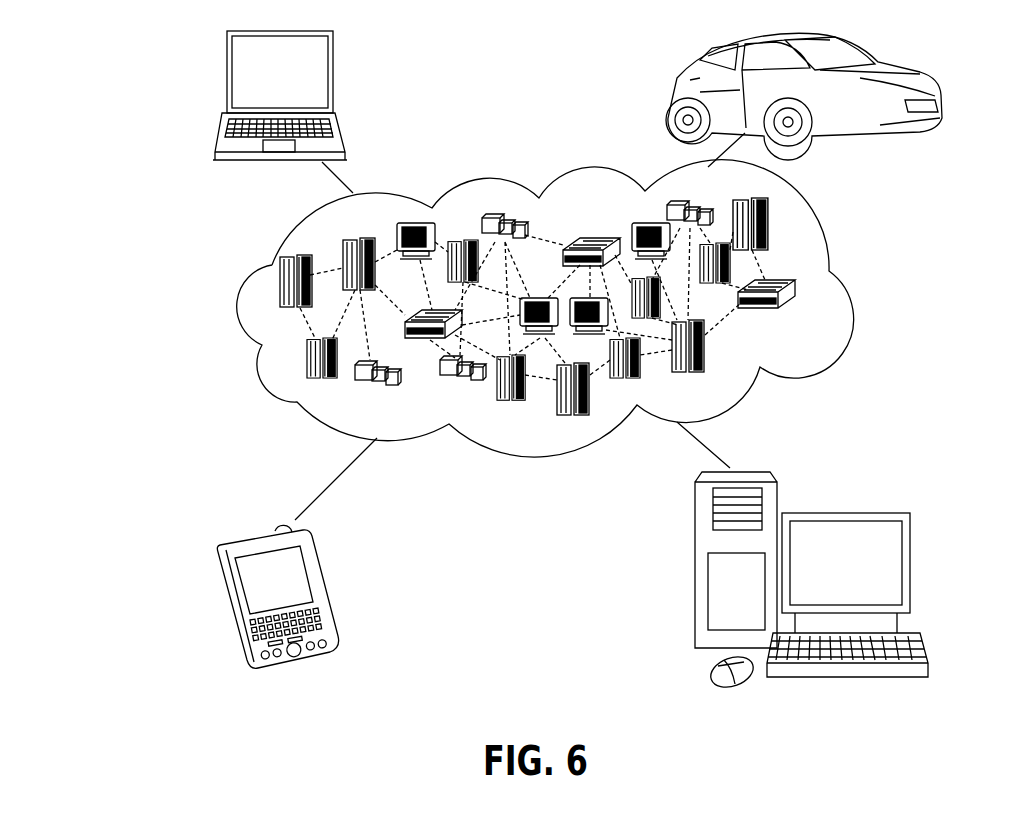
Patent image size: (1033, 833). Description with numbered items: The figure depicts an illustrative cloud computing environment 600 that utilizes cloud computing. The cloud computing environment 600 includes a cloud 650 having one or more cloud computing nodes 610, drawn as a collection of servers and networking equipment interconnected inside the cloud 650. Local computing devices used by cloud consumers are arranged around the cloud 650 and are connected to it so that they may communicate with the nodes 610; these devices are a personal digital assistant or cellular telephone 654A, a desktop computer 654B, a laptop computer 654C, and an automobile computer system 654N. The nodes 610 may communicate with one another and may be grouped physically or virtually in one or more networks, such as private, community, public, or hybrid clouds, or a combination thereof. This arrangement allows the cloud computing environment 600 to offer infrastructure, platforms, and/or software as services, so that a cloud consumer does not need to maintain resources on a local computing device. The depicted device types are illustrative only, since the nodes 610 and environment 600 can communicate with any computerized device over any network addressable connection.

The cloud computing environment 600 is at (95, 50).
The cloud 650 is at (843, 292).
The cloud computing nodes 610 is at (810, 311).
The personal digital assistant (PDA) or cellular telephone 654A is at (327, 587).
The desktop computer 654B is at (843, 513).
The laptop computer 654C is at (336, 80).
The automobile computer system 654N is at (672, 95).